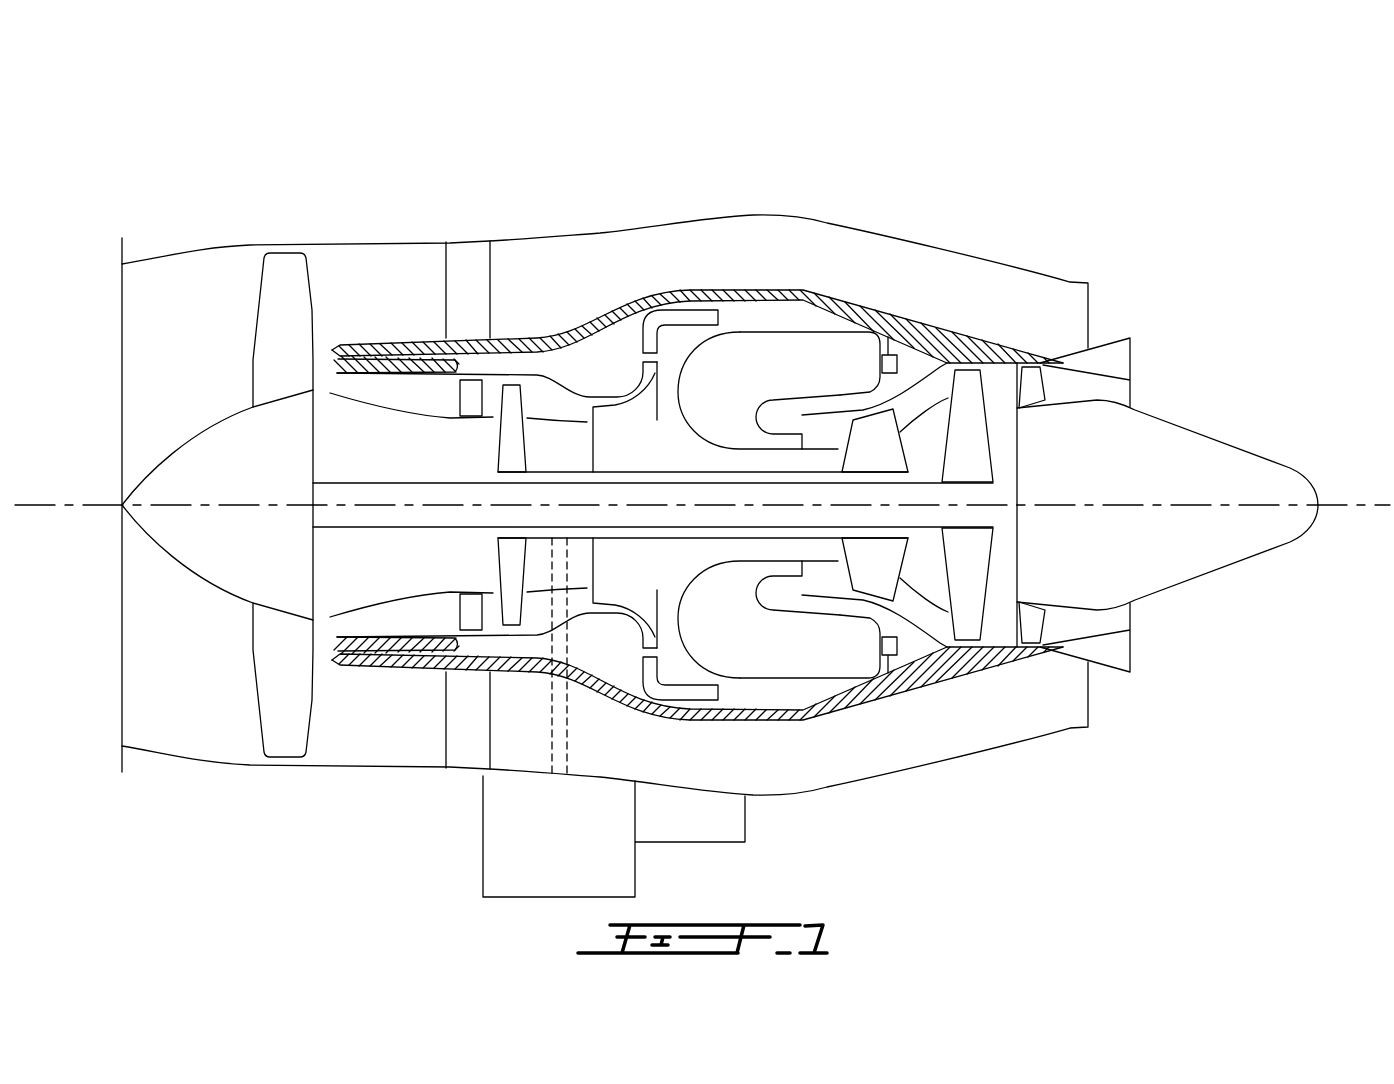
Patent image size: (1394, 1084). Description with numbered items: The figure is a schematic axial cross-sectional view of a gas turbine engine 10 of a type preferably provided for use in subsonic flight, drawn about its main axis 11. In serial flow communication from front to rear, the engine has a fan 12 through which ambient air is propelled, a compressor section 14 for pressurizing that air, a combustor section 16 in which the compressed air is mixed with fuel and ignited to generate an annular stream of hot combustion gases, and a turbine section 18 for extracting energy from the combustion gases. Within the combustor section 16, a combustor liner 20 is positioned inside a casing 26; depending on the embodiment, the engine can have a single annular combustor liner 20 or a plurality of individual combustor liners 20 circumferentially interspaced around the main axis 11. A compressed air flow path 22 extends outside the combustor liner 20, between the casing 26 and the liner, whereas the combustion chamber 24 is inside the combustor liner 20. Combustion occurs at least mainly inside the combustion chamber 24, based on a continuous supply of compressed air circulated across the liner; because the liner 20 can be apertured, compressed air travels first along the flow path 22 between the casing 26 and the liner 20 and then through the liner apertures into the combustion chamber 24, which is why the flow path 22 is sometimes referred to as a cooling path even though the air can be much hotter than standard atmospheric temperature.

The gas turbine engine 10 is at (968, 173).
The main axis 11 is at (1358, 505).
The fan 12 is at (282, 667).
The compressor section 14 is at (548, 397).
The combustor section 16 is at (750, 353).
The turbine section 18 is at (922, 577).
The combustor liner 20 is at (832, 332).
The compressed air flow path 22 is at (832, 407).
The combustion chamber 24 is at (795, 365).
The casing 26 is at (775, 293).